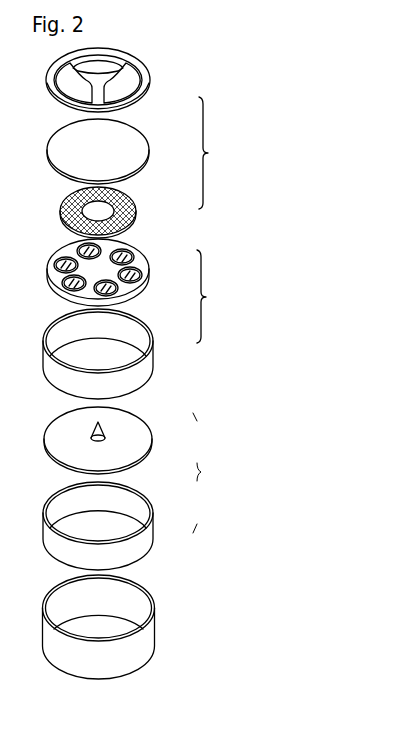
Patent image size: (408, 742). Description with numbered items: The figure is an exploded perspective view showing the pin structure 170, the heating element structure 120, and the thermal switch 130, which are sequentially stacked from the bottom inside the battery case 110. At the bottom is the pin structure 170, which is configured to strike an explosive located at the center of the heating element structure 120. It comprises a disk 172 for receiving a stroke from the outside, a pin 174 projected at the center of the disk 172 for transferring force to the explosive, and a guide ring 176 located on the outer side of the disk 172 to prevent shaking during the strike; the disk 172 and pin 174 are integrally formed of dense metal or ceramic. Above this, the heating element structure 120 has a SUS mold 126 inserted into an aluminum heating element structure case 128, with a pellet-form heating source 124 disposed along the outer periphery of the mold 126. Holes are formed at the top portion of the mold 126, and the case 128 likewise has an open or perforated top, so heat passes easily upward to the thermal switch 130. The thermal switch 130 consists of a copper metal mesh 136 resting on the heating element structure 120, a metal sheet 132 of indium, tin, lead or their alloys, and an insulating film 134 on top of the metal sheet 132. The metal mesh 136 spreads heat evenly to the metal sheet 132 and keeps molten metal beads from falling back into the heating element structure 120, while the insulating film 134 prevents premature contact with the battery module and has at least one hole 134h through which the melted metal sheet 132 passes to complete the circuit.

The lower case 110 is at (152, 630).
The heating element structure 120 is at (211, 296).
The heating source 124 is at (132, 268).
The mold 126 is at (120, 272).
The heating element structure case 128 is at (154, 354).
The thermal switch 130 is at (214, 153).
The metal sheet 132 is at (136, 153).
The insulating film 134 is at (120, 80).
The hole 134h is at (137, 89).
The metal mesh 136 is at (145, 210).
The pin structure 170 is at (207, 473).
The disk 172 is at (116, 440).
The pin 174 is at (108, 432).
The guide ring 176 is at (145, 535).